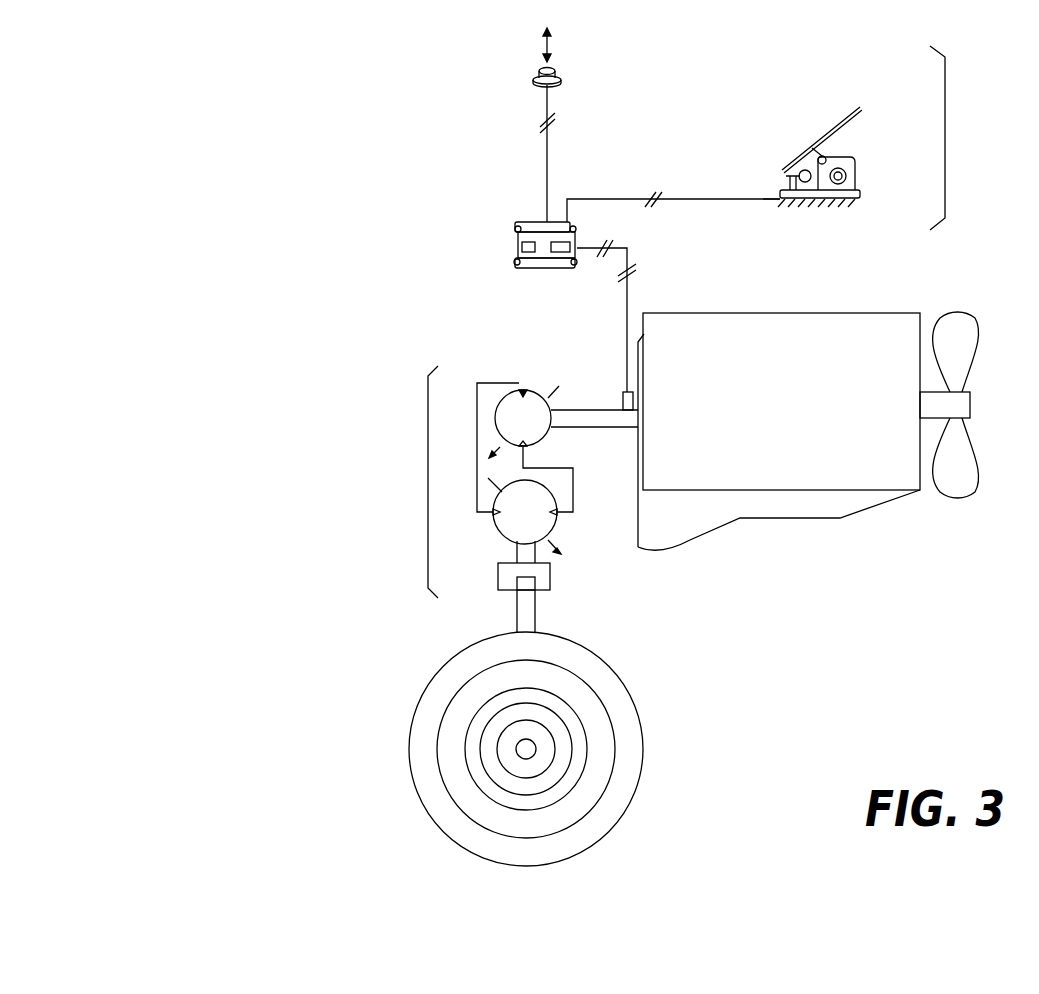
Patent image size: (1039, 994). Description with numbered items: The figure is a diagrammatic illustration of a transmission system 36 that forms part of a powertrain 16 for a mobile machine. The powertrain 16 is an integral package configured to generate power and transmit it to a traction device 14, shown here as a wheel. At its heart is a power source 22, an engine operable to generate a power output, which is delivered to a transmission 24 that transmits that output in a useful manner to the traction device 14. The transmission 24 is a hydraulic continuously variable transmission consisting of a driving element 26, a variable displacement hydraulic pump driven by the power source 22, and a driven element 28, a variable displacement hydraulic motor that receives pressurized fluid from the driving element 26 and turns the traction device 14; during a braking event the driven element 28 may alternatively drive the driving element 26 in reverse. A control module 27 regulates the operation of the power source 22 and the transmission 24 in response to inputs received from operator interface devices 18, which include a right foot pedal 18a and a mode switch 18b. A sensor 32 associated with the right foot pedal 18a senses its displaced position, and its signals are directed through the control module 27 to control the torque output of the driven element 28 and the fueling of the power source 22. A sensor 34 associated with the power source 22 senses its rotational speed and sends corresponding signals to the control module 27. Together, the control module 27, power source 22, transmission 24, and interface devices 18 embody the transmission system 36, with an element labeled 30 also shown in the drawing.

The traction device 14 is at (643, 743).
The powertrain 16 is at (788, 552).
The operator interface devices 18 is at (947, 102).
The right foot pedal 18a is at (862, 108).
The mode switch 18b is at (561, 73).
The power source 22 is at (794, 406).
The transmission 24 is at (420, 480).
The driving element 26 is at (497, 428).
The control module 27 is at (566, 222).
The driven element 28 is at (557, 496).
The hydraulic circuit housing 30 is at (490, 382).
The sensor 32 is at (765, 190).
The sensor 34 is at (622, 394).
The transmission system 36 is at (106, 196).